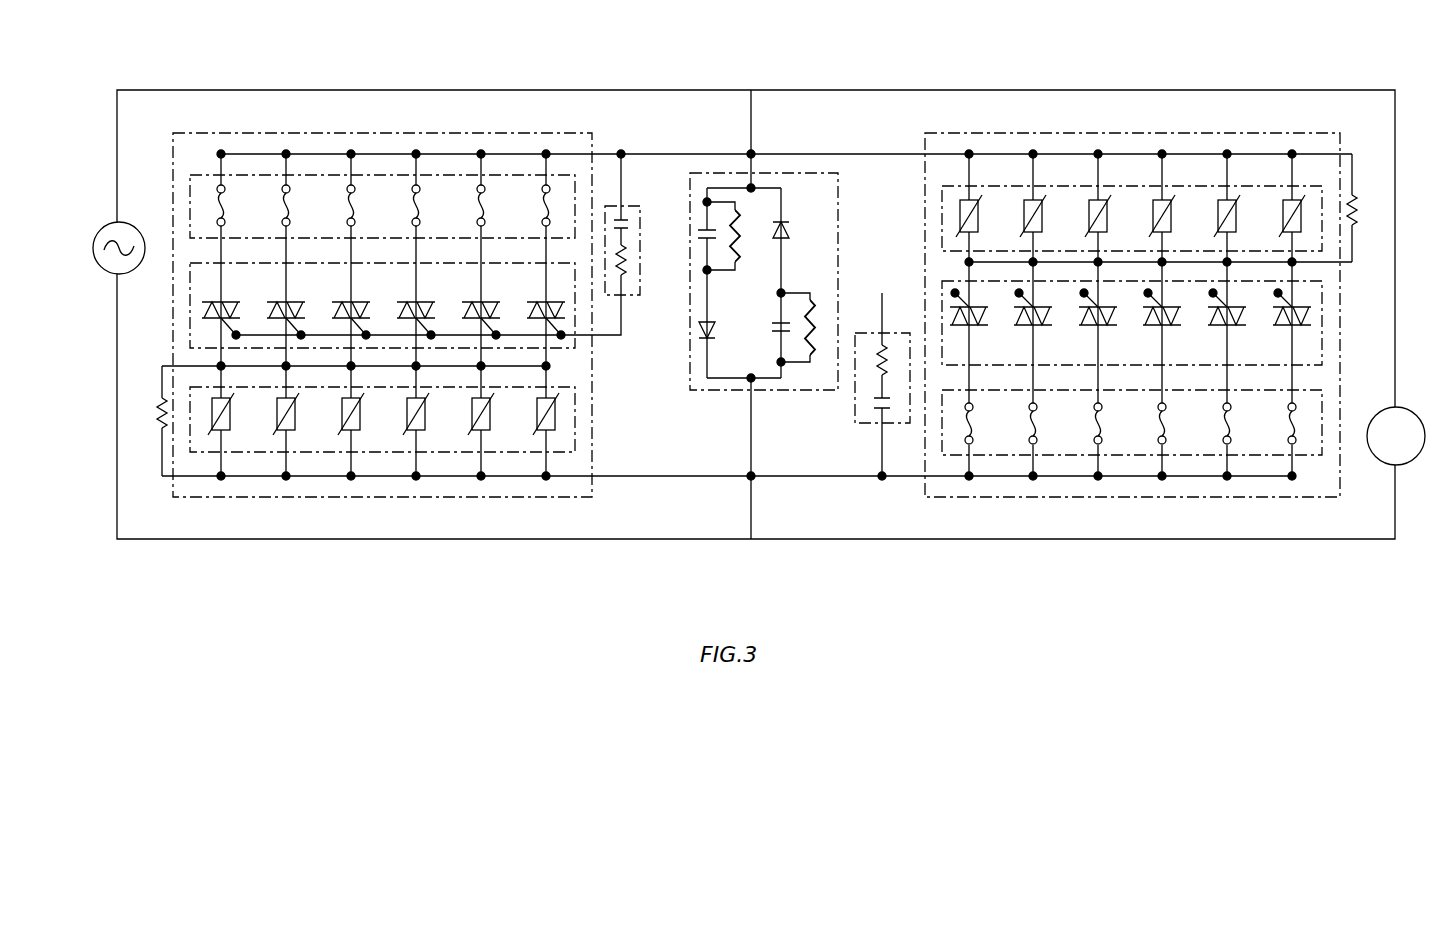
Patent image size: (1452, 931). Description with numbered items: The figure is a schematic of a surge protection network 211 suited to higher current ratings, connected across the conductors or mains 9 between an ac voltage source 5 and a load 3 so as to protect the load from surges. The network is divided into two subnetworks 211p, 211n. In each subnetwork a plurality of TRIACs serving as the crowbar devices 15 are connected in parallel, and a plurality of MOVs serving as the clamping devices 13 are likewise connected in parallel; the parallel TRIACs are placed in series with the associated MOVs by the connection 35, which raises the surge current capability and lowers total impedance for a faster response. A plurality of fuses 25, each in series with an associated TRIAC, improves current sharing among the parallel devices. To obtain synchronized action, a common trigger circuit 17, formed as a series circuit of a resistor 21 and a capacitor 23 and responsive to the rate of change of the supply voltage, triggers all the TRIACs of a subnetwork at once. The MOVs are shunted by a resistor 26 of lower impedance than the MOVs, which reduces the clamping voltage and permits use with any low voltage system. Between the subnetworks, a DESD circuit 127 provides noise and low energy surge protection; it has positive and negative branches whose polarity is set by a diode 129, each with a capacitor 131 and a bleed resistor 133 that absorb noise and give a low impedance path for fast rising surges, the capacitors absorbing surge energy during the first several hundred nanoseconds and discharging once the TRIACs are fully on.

The load 3 is at (1416, 460).
The ac voltage source 5 is at (113, 222).
The conductors or mains 9 is at (390, 90).
The clamping device 13 is at (290, 408).
The crowbar device 15 is at (282, 300).
The trigger circuit 17 is at (640, 262).
The resistor 21 is at (621, 280).
The capacitor 23 is at (623, 218).
The fuses 25 is at (278, 205).
The resistor 26 is at (160, 416).
The connection 35 is at (546, 366).
The DESD circuit 127 is at (744, 315).
The diode 129 is at (784, 226).
The capacitor 131 is at (704, 232).
The bleed resistor 133 is at (738, 248).
The surge protection network 211 is at (843, 70).
The subnetwork 211p is at (470, 133).
The subnetwork 211n is at (1190, 133).